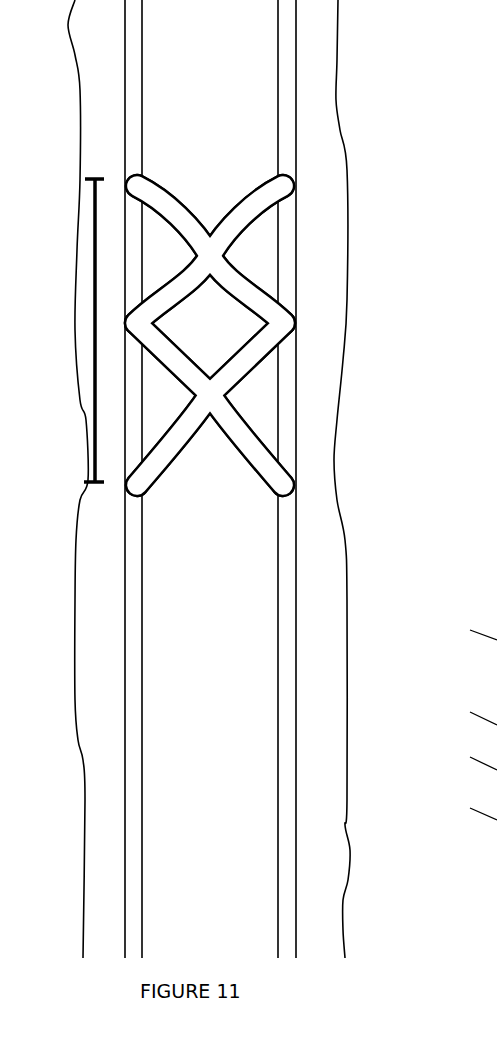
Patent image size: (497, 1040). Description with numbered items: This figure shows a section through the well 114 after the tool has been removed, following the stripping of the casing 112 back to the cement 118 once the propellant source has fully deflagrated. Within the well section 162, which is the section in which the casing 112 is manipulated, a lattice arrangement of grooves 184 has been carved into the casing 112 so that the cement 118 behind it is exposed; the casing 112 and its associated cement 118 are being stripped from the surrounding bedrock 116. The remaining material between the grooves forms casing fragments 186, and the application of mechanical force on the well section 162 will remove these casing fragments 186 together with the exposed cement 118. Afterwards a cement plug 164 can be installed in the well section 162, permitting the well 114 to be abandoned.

The casing 112 is at (287, 673).
The well 114 is at (248, 767).
The bedrock 116 is at (368, 773).
The cement 118 is at (277, 320).
The well section 162 is at (70, 330).
The cement plug 164 is at (496, 392).
The lattice arrangement of grooves 184 is at (248, 282).
The casing fragments 186 is at (255, 402).